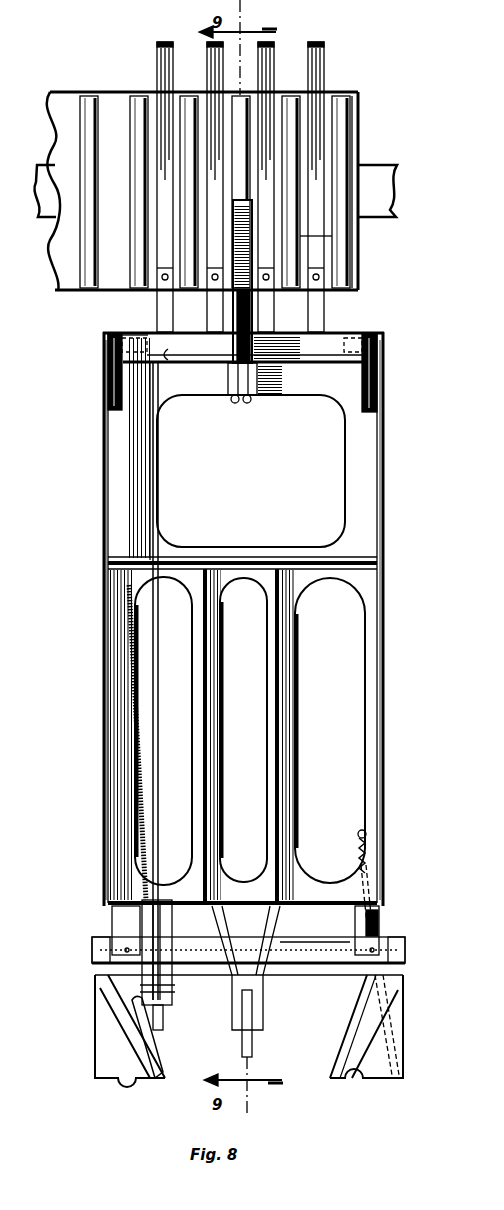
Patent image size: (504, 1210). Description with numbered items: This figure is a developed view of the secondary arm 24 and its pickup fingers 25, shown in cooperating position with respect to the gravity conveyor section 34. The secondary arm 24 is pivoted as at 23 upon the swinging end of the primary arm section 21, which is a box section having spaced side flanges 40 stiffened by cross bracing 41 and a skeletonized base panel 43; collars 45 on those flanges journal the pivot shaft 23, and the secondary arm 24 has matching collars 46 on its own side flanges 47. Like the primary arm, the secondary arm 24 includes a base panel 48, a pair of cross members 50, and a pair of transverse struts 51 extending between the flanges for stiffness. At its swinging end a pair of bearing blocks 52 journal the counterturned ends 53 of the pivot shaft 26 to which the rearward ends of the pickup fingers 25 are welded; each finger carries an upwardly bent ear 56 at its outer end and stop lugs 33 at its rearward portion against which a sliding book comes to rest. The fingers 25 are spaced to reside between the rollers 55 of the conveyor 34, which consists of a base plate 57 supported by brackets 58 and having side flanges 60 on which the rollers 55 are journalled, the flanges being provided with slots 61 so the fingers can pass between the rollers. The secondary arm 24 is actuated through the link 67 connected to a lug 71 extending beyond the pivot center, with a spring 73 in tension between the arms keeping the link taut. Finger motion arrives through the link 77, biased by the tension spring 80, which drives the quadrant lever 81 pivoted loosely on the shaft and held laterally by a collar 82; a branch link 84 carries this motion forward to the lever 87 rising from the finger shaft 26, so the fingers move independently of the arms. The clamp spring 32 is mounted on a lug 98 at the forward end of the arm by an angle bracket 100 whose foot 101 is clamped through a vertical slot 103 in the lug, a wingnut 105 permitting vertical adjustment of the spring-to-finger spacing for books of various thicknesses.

The primary arm section 21 is at (390, 1060).
The pivot shaft 23 is at (300, 960).
The secondary arm 24 is at (388, 658).
The pickup fingers 25 is at (318, 238).
The pivot shaft 26 is at (128, 336).
The clamp spring 32 is at (243, 281).
The stop lugs 33 is at (160, 272).
The gravity conveyor section 34 is at (342, 192).
The side flanges 40 is at (95, 1026).
The cross bracing 41 is at (152, 1060).
The base panel 43 is at (354, 1044).
The collars 45 is at (92, 949).
The collars 46 is at (124, 942).
The side flanges 47 is at (103, 752).
The base panel 48 is at (232, 578).
The cross members 50 is at (310, 560).
The transverse struts 51 is at (205, 750).
The bearing blocks 52 is at (110, 377).
The counterturned ends 53 is at (124, 348).
The rollers 55 is at (86, 248).
The upwardly bent ear 56 is at (316, 42).
The base plate 57 is at (58, 135).
The brackets 58 is at (46, 207).
The side flanges 60 is at (122, 92).
The slots 61 is at (270, 90).
The link 67 is at (254, 1049).
The lug 71 is at (270, 936).
The spring 73 is at (376, 925).
The link 77 is at (165, 1030).
The tension spring 80 is at (140, 660).
The quadrant lever 81 is at (172, 990).
The collar 82 is at (176, 945).
The branch link 84 is at (154, 525).
The lever 87 is at (170, 356).
The lug 98 is at (274, 386).
The angle bracket 100 is at (252, 322).
The foot 101 is at (262, 362).
The vertical slot 103 is at (230, 384).
The wingnut 105 is at (245, 405).